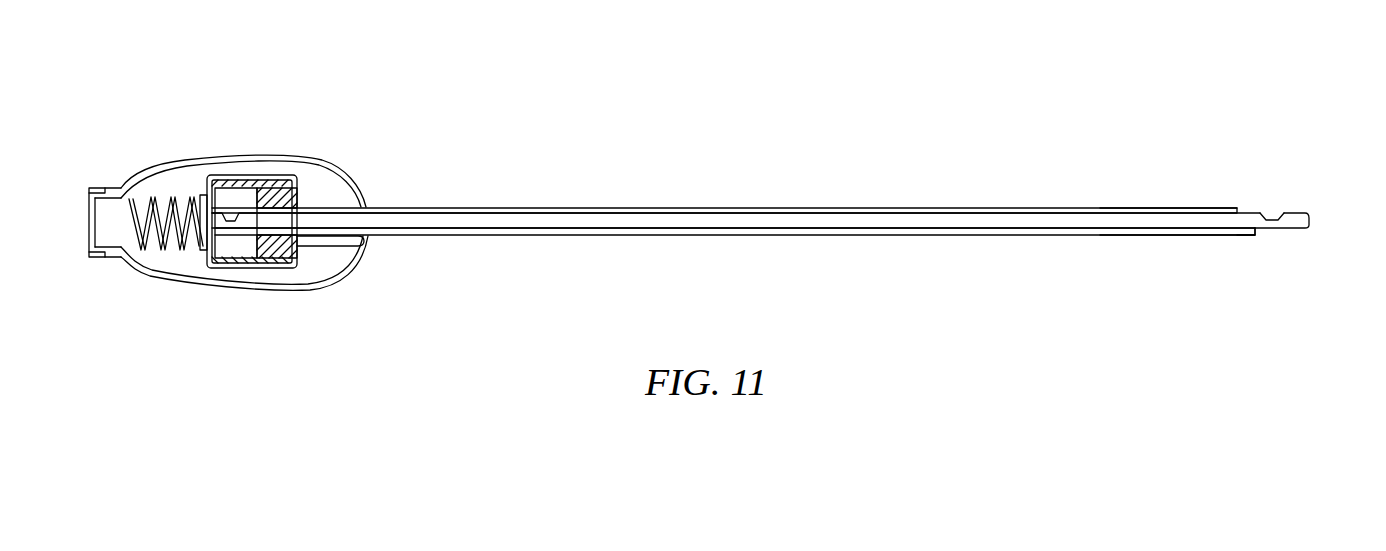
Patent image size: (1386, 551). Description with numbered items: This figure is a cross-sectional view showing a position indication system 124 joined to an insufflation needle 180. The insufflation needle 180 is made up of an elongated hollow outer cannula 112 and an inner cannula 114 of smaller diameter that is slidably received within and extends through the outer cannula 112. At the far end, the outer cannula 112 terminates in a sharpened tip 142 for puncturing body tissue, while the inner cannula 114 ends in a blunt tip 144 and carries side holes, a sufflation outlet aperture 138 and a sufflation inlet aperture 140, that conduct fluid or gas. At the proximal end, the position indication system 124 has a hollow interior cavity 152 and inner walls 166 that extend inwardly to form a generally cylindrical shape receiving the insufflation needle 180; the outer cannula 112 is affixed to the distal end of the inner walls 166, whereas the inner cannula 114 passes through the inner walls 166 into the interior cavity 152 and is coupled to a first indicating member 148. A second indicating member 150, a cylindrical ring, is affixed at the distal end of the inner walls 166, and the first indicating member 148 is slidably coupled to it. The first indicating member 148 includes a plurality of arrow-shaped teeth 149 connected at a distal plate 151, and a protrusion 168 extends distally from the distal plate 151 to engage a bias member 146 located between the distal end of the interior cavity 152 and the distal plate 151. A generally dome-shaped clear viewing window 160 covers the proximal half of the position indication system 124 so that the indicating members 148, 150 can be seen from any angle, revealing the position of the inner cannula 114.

The hollow outer cannula 112 is at (755, 208).
The inner cannula 114 is at (887, 222).
The position indication system 124 is at (289, 97).
The sufflation outlet aperture 138 is at (1265, 211).
The sufflation inlet aperture 140 is at (238, 202).
The sharpened tip 142 is at (1233, 237).
The blunt tip 144 is at (1312, 222).
The bias member 146 is at (127, 223).
The first indicating member 148 is at (250, 268).
The teeth 149 is at (283, 250).
The second indicating member 150 is at (280, 245).
The distal plate 151 is at (210, 250).
The hollow interior cavity 152 is at (312, 178).
The viewing window 160 is at (357, 178).
The inner walls 166 is at (347, 241).
The protrusion 168 is at (190, 190).
The insufflation needle 180 is at (1055, 183).